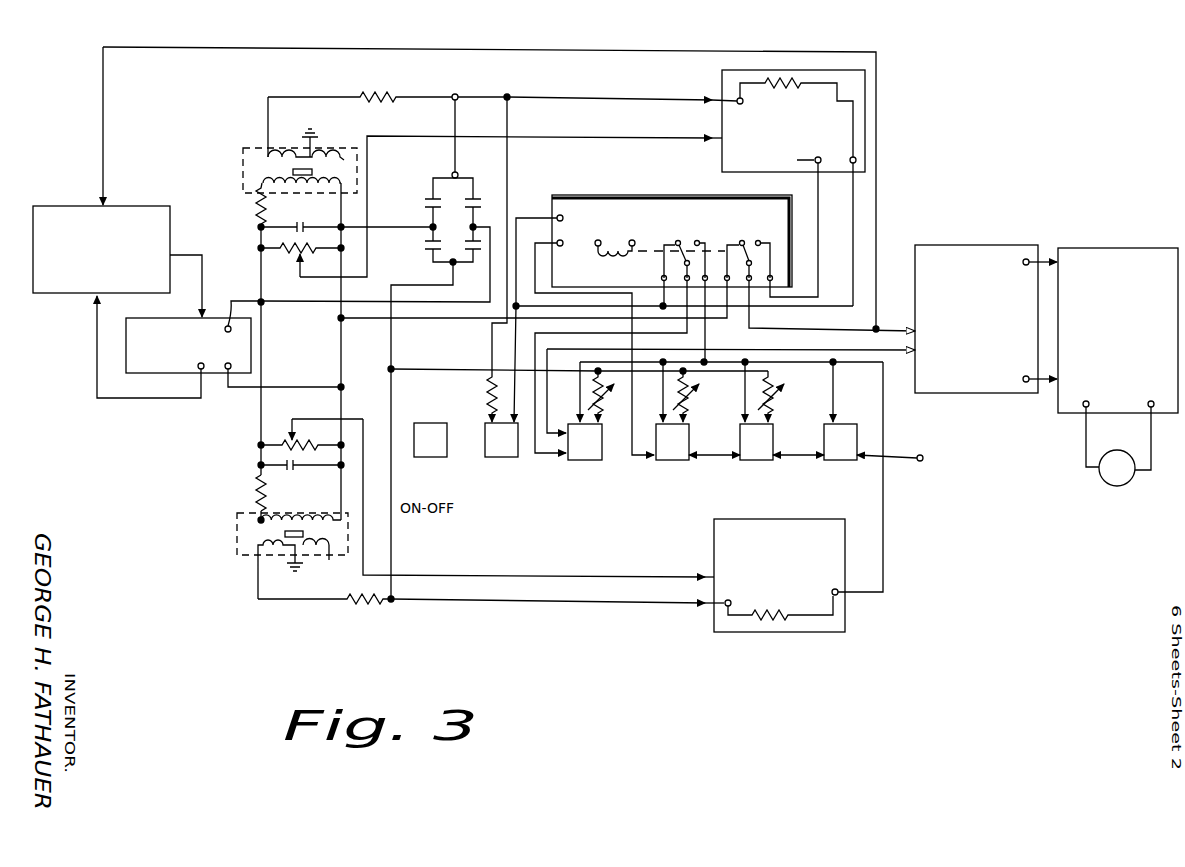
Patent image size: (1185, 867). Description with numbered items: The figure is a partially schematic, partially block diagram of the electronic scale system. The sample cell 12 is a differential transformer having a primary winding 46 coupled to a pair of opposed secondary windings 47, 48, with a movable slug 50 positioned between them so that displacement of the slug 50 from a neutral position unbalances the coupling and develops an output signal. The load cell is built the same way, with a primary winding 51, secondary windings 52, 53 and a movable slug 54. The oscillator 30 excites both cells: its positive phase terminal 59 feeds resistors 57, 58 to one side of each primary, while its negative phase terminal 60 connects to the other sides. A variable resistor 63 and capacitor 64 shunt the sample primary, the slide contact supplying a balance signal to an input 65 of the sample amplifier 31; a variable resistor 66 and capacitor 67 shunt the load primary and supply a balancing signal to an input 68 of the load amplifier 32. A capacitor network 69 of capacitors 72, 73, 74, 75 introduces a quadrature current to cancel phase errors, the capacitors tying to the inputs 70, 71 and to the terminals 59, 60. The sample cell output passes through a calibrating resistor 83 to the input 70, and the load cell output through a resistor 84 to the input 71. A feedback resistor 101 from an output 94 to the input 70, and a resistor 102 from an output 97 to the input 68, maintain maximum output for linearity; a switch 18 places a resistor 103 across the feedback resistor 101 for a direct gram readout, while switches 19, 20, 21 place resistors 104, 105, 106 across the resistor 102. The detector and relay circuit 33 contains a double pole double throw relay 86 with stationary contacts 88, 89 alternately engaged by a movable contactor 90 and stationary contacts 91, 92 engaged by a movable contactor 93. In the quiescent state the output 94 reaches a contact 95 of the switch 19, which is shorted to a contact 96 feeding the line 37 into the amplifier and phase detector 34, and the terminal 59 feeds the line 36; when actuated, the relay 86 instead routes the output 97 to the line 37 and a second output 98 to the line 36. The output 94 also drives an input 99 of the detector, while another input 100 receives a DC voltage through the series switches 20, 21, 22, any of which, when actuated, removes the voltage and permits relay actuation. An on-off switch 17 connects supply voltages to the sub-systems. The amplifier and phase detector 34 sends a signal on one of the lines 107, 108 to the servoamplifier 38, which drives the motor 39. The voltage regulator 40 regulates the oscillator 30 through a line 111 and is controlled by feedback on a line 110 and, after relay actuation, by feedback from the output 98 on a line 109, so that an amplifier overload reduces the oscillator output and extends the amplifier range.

The sample cell 12 is at (243, 192).
The on-off switch 17 is at (436, 458).
The switch 18 is at (498, 458).
The switch 19 is at (585, 462).
The switch 20 is at (670, 462).
The switch 21 is at (750, 462).
The switch 22 is at (836, 462).
The oscillator 30 is at (165, 317).
The sample amplifier 31 is at (722, 78).
The load amplifier 32 is at (714, 527).
The detector and relay circuit 33 is at (606, 194).
The amplifier and phase detector 34 is at (966, 245).
The line 36 is at (880, 327).
The line 37 is at (854, 354).
The servoamplifier 38 is at (1104, 248).
The motor 39 is at (1105, 481).
The voltage regulator 40 is at (138, 207).
The primary winding 46 is at (266, 205).
The secondary winding 47 is at (264, 152).
The secondary winding 48 is at (344, 157).
The movable slug 50 is at (291, 172).
The primary winding 51 is at (237, 522).
The secondary winding 52 is at (262, 553).
The secondary winding 53 is at (330, 566).
The movable slug 54 is at (284, 535).
The resistor 57 is at (229, 226).
The resistor 58 is at (256, 481).
The positive phase terminal 59 is at (228, 372).
The negative phase terminal 60 is at (228, 326).
The variable resistor 63 is at (293, 259).
The capacitor 64 is at (304, 222).
The input 65 is at (706, 140).
The variable resistor 66 is at (297, 441).
The capacitor 67 is at (293, 471).
The input 68 is at (703, 576).
The capacitor network 69 is at (455, 203).
The input 70 is at (712, 102).
The input 71 is at (690, 608).
The capacitor 72 is at (424, 200).
The capacitor 73 is at (477, 197).
The capacitor 74 is at (424, 249).
The capacitor 75 is at (471, 243).
The resistor 83 is at (400, 96).
The resistor 84 is at (372, 605).
The relay 86 is at (712, 197).
The stationary contact 88 is at (672, 238).
The stationary contact 89 is at (738, 243).
The movable contactor 90 is at (692, 240).
The stationary contact 91 is at (746, 252).
The stationary contact 92 is at (762, 240).
The movable contactor 93 is at (753, 243).
The output 94 is at (857, 159).
The contact 95 is at (550, 458).
The contact 96 is at (550, 440).
The output 97 is at (841, 595).
The second output 98 is at (791, 223).
The input 99 is at (558, 214).
The input 100 is at (562, 244).
The feedback resistor 101 is at (794, 77).
The resistor 102 is at (778, 613).
The resistor 103 is at (482, 389).
The resistor 104 is at (615, 401).
The resistor 105 is at (704, 397).
The resistor 106 is at (789, 399).
The line 107 is at (1046, 259).
The line 108 is at (1044, 386).
The line 109 is at (105, 127).
The line 110 is at (118, 400).
The line 111 is at (212, 254).